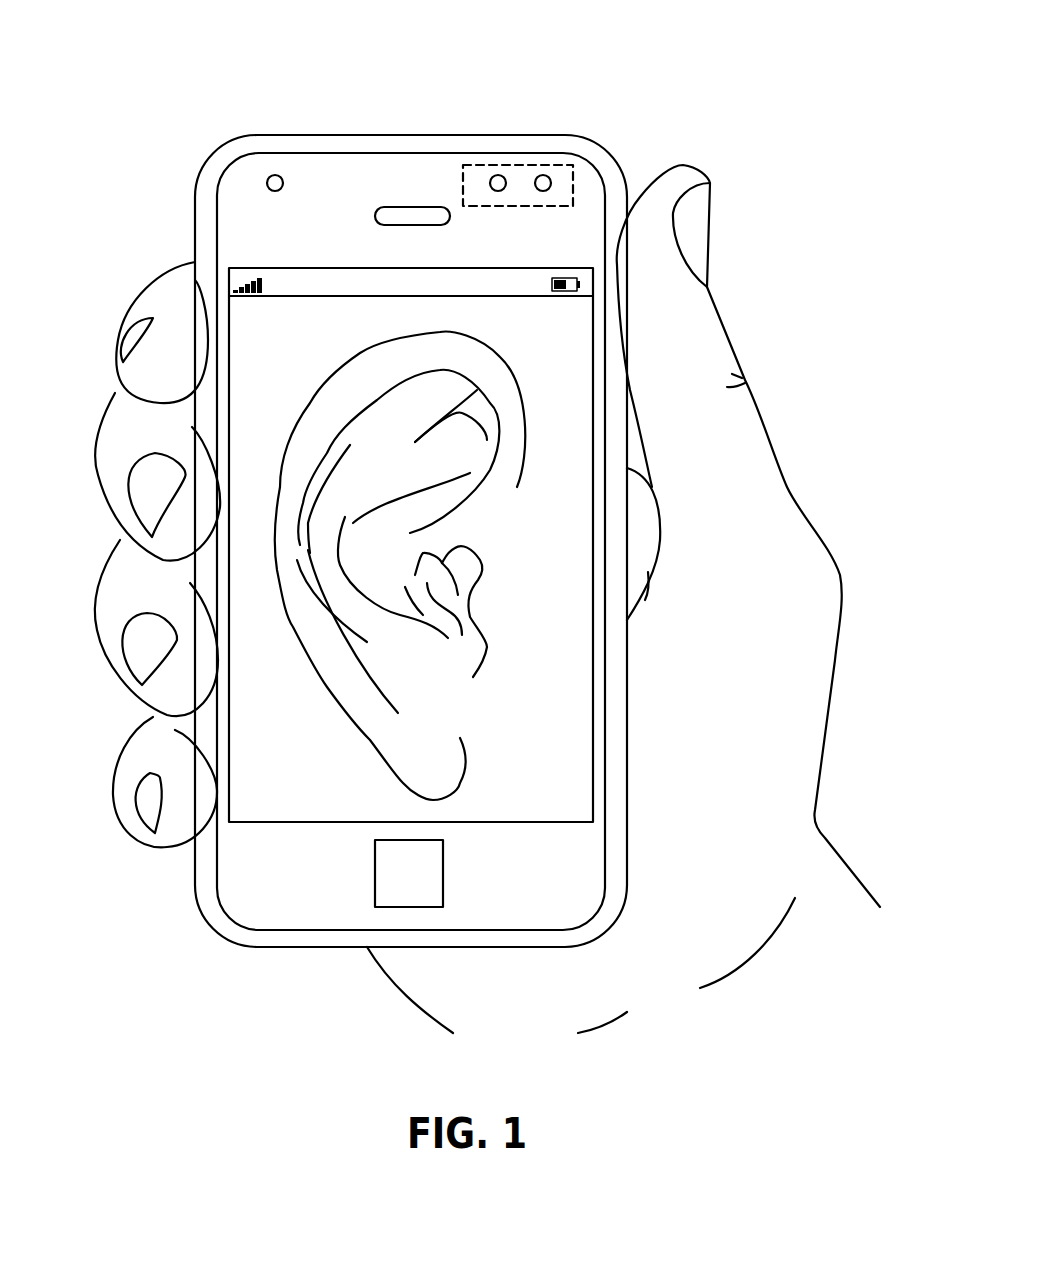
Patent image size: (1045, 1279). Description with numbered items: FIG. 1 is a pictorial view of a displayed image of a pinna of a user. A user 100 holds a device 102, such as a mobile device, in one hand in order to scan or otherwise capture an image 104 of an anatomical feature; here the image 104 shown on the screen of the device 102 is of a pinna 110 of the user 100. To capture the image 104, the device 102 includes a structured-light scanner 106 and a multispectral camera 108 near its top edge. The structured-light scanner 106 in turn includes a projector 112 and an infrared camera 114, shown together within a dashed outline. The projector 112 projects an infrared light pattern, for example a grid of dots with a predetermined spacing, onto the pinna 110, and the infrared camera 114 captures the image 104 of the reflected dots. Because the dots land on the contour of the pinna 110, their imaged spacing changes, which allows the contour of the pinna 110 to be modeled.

The user 100 is at (790, 752).
The device 102 is at (195, 218).
The image 104 is at (429, 528).
The structured-light scanner 106 is at (553, 165).
The multispectral camera 108 is at (270, 176).
The pinna 110 is at (313, 437).
The projector 112 is at (551, 185).
The infrared camera 114 is at (492, 176).